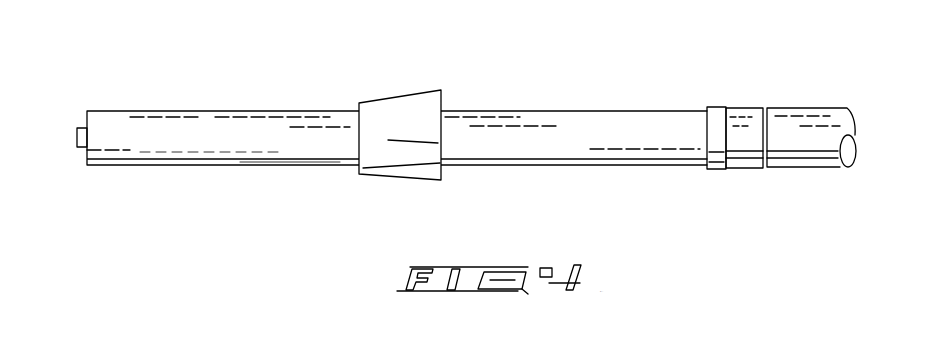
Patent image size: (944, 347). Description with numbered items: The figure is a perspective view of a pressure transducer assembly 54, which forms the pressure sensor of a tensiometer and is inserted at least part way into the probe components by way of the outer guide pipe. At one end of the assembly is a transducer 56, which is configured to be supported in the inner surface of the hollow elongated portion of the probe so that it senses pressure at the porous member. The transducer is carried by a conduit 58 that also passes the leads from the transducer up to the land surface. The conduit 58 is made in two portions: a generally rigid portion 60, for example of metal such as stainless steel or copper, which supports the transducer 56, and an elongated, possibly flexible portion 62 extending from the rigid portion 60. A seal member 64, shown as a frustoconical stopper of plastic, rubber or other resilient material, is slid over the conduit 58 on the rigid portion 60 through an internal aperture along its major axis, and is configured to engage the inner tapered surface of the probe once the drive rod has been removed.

The pressure transducer assembly 54 is at (557, 106).
The transducer 56 is at (77, 143).
The conduit 58 is at (238, 151).
The generally rigid portion 60 is at (286, 164).
The elongated portion 62 is at (810, 148).
The seal member 64 is at (395, 102).